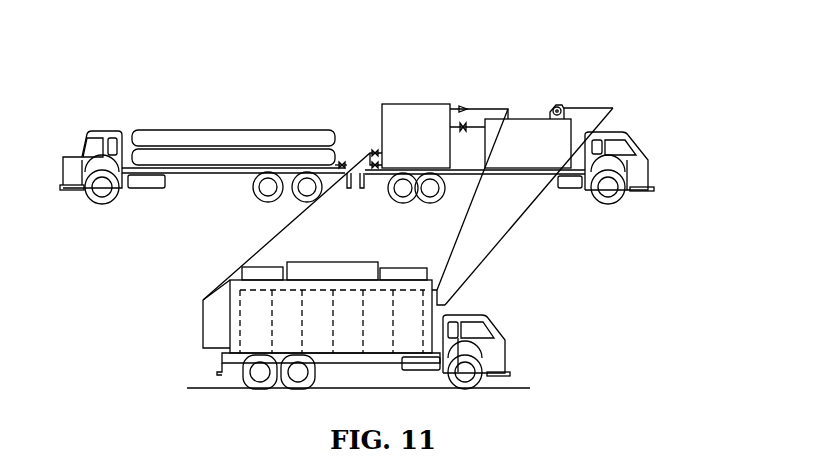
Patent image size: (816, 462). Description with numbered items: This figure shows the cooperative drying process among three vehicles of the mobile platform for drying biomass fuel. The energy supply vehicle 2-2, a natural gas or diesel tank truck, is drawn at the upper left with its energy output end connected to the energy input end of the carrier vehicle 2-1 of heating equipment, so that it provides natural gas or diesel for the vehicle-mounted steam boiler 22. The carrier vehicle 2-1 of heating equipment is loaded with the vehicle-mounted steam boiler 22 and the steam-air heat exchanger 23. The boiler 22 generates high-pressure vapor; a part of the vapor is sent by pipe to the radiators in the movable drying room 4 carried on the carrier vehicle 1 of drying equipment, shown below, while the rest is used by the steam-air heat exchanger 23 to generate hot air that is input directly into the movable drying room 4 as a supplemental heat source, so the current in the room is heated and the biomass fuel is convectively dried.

The carrier vehicle of drying equipment 1 is at (388, 300).
The movable drying room 4 is at (328, 280).
The vehicle-mounted steam boiler 22 is at (420, 113).
The steam-air heat exchanger 23 is at (518, 128).
The carrier vehicle of heating equipment 2-1 is at (638, 167).
The energy supply vehicle 2-2 is at (107, 135).